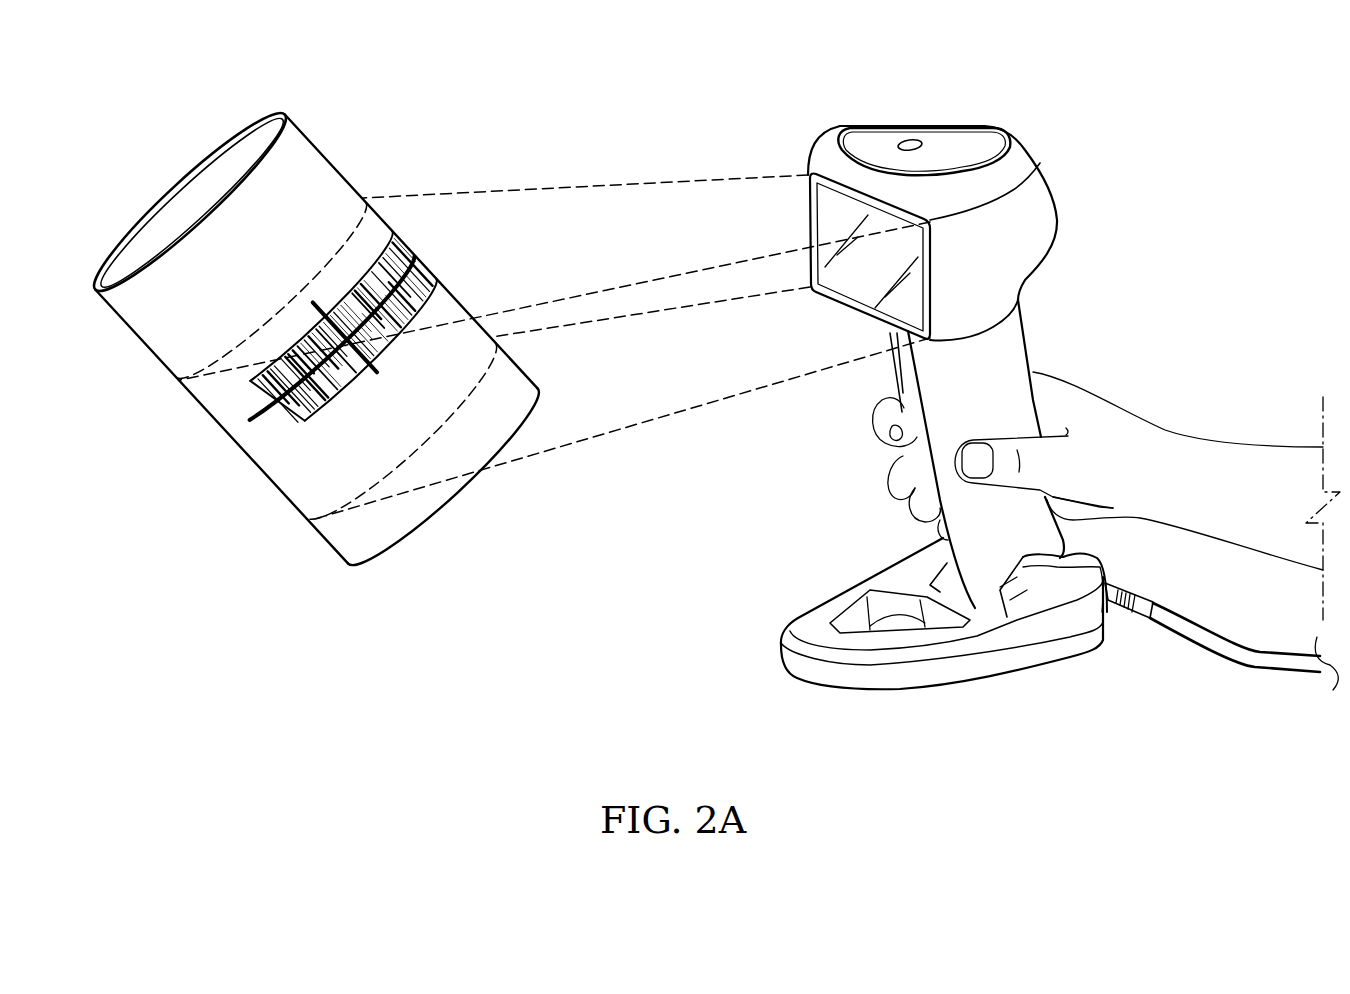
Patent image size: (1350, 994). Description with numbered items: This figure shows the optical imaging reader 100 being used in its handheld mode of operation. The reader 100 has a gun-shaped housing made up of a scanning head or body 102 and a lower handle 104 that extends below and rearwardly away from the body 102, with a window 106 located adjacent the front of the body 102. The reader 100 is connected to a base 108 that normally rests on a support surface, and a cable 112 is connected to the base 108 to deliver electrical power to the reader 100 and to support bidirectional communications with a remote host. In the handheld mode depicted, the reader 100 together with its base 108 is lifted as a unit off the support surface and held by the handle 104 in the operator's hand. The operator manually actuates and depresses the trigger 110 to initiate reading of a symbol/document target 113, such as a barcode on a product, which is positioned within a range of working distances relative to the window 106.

The optical imaging reader 100 is at (1027, 389).
The scanning head or body 102 is at (1047, 192).
The lower handle 104 is at (1017, 399).
The window 106 is at (832, 223).
The base 108 is at (987, 680).
The trigger 110 is at (903, 393).
The cable 112 is at (1240, 660).
The symbol/document target 113 is at (286, 417).